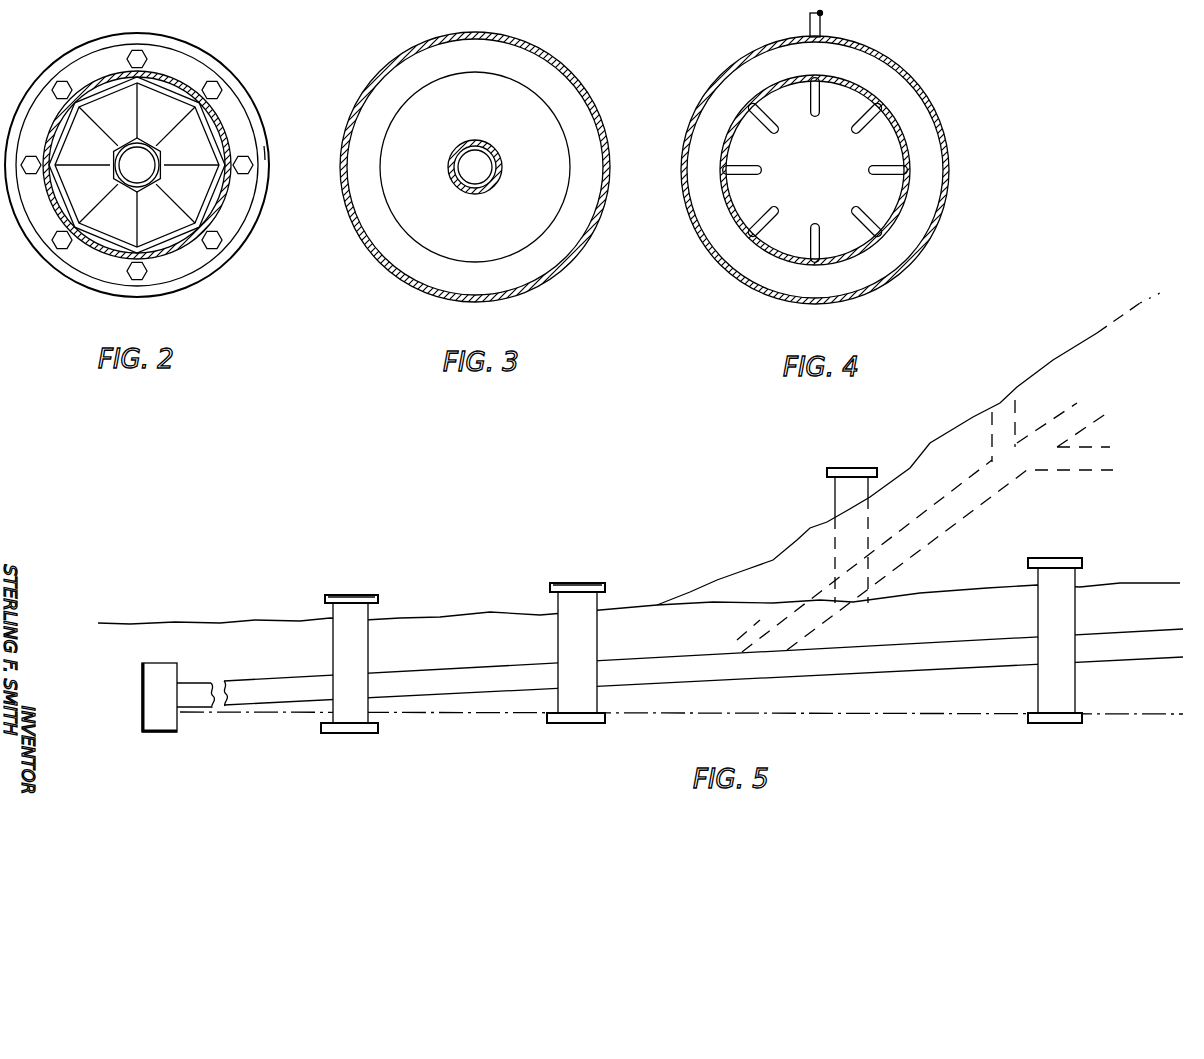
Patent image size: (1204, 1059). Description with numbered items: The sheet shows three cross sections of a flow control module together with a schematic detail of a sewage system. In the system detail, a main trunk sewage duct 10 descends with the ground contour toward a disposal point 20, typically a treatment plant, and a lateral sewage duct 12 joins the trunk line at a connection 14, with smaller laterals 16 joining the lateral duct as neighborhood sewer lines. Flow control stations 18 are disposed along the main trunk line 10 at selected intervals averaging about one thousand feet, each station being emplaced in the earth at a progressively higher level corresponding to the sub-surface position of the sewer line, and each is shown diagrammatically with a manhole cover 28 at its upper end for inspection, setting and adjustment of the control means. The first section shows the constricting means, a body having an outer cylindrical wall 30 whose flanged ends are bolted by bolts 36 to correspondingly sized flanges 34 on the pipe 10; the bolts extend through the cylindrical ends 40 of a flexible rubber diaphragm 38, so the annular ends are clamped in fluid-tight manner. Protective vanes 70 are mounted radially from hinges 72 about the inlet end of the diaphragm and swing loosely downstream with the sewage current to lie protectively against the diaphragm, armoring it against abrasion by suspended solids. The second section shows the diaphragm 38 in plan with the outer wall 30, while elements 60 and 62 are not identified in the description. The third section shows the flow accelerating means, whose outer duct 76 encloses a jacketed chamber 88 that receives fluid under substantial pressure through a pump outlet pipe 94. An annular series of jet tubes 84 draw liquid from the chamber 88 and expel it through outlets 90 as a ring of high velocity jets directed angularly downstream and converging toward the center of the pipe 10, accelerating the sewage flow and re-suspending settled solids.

In FIG. 5, the main trunk sewage duct 10 is at (478, 667).
In FIG. 5, the lateral sewage duct 12 is at (940, 533).
In FIG. 5, the connection of lateral duct 14 is at (753, 634).
In FIG. 5, the smaller laterals 16 is at (991, 446).
In FIG. 5, the flow control station 18 is at (372, 612).
In FIG. 5, the disposal point 20 is at (175, 666).
In FIG. 5, the manhole cover 28 is at (347, 594).
In FIG. 2, the outer cylindrical wall 30 is at (258, 224).
In FIG. 3, the outer cylindrical wall 30 is at (582, 93).
In FIG. 2, the flange 34 is at (248, 188).
In FIG. 2, the bolts 36 is at (219, 97).
In FIG. 2, the cylindrical diaphragm 38 is at (160, 158).
In FIG. 3, the cylindrical diaphragm 38 is at (553, 155).
In FIG. 2, the diaphragm ends 40 is at (267, 153).
In FIG. 3, the inner ring 60 is at (577, 117).
In FIG. 2, the central bore 62 is at (148, 170).
In FIG. 3, the central bore 62 is at (482, 172).
In FIG. 2, the protective vanes 70 is at (137, 165).
In FIG. 2, the hinges 72 is at (216, 138).
In FIG. 4, the outer duct 76 is at (925, 96).
In FIG. 4, the jet tubes 84 is at (893, 178).
In FIG. 4, the chamber 88 is at (853, 170).
In FIG. 4, the jet outlets 90 is at (862, 215).
In FIG. 4, the pump outlet pipe 94 is at (821, 27).